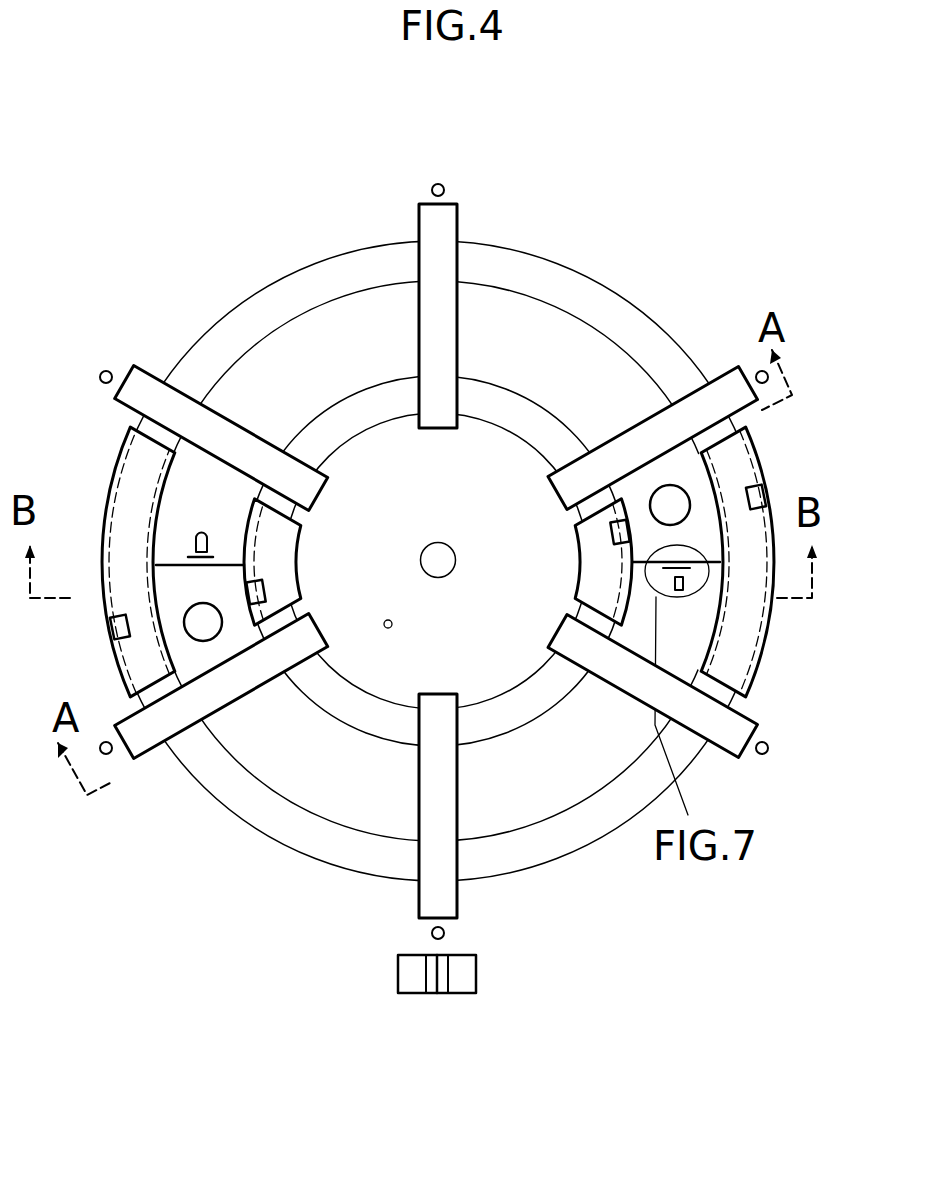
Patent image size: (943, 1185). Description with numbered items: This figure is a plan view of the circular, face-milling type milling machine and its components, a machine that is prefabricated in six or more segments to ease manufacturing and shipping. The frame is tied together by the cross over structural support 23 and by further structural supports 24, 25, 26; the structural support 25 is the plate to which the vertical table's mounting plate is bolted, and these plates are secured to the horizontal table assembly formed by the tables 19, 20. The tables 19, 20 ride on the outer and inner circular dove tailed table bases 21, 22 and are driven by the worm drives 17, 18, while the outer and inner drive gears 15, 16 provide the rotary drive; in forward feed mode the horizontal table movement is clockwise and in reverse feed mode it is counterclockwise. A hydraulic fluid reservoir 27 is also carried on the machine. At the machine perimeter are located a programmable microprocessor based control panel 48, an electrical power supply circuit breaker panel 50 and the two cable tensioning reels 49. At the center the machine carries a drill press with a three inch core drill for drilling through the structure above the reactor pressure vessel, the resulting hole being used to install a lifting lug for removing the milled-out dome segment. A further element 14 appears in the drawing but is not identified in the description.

The mounting hole 14 is at (340, 145).
The outer drive gear 15 is at (436, 508).
The inner drive gear 16 is at (435, 535).
The worm drive 17 is at (758, 492).
The worm drive 18 is at (559, 513).
The table 19 is at (757, 673).
The table 20 is at (561, 562).
The outer circular dove tailed table base 21 is at (436, 561).
The inner circular dove tailed table base 22 is at (435, 561).
The cross over structural support 23 is at (352, 284).
The structural support 24 is at (180, 655).
The structural support 25 is at (173, 562).
The structural support 26 is at (391, 614).
The hydraulic fluid reservoir 27 is at (188, 630).
The control panel 48 is at (397, 968).
The cable tensioning reels 49 is at (437, 953).
The circuit breaker panel 50 is at (477, 970).